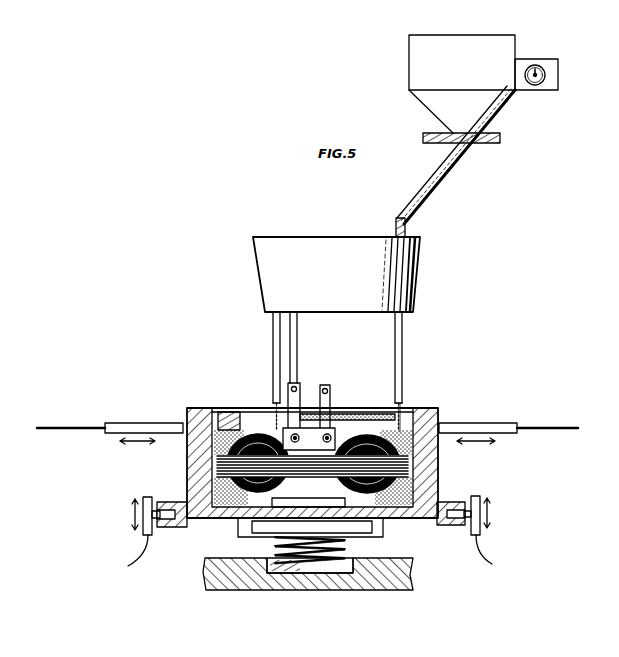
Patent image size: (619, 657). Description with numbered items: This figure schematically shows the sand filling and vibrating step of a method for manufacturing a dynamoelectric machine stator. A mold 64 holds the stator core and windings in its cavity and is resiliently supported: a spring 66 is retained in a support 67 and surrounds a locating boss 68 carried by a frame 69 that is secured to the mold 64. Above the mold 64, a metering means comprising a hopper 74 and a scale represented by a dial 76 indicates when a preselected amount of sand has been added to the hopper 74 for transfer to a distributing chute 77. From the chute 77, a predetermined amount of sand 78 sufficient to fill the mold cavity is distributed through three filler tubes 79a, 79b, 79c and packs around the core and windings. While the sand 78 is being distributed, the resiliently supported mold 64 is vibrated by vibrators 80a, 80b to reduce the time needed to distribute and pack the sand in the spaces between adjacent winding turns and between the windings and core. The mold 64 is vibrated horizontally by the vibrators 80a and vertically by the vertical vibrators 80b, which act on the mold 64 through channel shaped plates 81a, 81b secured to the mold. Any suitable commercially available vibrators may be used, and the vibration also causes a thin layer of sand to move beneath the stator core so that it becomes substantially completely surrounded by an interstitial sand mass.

The hopper 74 is at (409, 62).
The dial 76 is at (545, 75).
The distributing chute 77 is at (321, 245).
The filler tube 79a is at (273, 355).
The filler tube 79b is at (297, 350).
The filler tube 79c is at (402, 337).
The sand 78 is at (400, 430).
The vibrators 80a is at (128, 428).
The mold 64 is at (192, 452).
The channel shaped plate 81a is at (180, 505).
The channel shaped plate 81b is at (450, 505).
The vertical vibrators 80b is at (143, 517).
The frame 69 is at (238, 540).
The locating boss 68 is at (282, 546).
The spring 66 is at (345, 551).
The support 67 is at (413, 578).